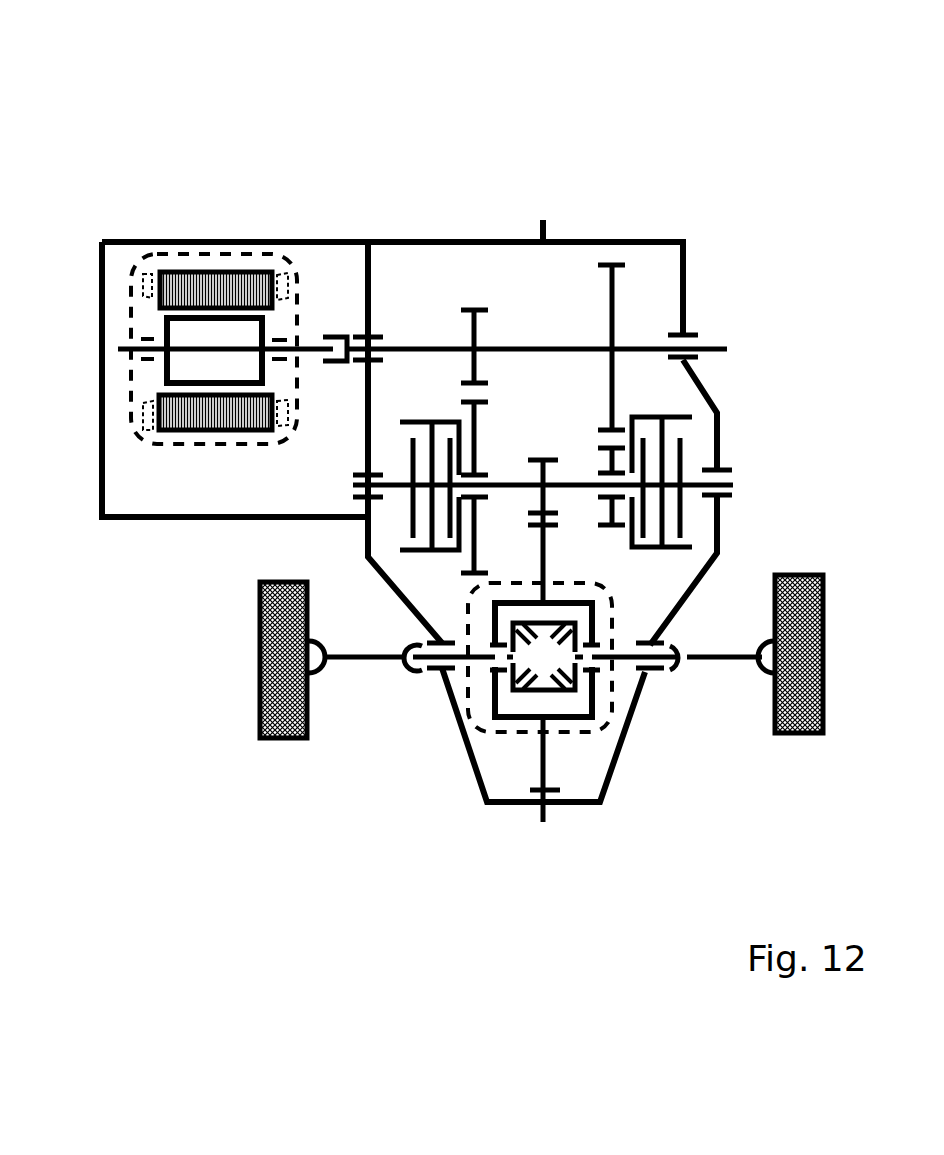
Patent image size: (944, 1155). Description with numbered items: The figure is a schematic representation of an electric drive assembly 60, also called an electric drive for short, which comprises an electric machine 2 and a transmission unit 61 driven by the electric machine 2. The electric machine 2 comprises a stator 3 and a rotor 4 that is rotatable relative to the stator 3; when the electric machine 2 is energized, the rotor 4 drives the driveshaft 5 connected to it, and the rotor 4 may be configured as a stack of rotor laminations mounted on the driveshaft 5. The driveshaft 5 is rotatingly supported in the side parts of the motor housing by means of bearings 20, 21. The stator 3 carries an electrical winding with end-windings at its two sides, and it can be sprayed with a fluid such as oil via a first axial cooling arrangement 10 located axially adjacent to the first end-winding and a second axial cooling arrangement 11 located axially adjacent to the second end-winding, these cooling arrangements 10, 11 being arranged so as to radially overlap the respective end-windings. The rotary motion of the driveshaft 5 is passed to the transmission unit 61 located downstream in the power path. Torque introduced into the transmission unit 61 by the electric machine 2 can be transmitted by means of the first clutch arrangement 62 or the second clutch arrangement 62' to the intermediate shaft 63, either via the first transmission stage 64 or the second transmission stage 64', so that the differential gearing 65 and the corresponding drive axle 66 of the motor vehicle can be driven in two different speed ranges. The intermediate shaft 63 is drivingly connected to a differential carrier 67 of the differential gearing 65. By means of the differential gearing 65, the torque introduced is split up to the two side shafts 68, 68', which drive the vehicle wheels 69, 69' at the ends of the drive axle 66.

The electric drive assembly 60 is at (410, 132).
The electric machine 2 is at (208, 226).
The stator 3 is at (244, 272).
The rotor 4 is at (200, 340).
The driveshaft 5 is at (279, 330).
The bearing 21 is at (266, 346).
The bearing 20 is at (146, 283).
The second axial cooling arrangement 11 is at (143, 415).
The first axial cooling arrangement 10 is at (287, 420).
The transmission unit 61 is at (495, 233).
The first clutch arrangement 62 is at (429, 358).
The second clutch arrangement 62' is at (716, 448).
The intermediate shaft 63 is at (687, 478).
The first transmission stage 64 is at (535, 373).
The second transmission stage 64' is at (682, 381).
The differential gearing 65 is at (599, 740).
The drive axle 66 is at (216, 663).
The differential carrier 67 is at (600, 584).
The side shaft 68 is at (410, 710).
The side shaft 68' is at (677, 700).
The vehicle wheel 69 is at (292, 699).
The vehicle wheel 69' is at (797, 693).